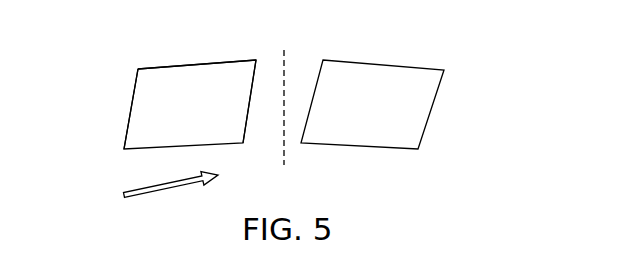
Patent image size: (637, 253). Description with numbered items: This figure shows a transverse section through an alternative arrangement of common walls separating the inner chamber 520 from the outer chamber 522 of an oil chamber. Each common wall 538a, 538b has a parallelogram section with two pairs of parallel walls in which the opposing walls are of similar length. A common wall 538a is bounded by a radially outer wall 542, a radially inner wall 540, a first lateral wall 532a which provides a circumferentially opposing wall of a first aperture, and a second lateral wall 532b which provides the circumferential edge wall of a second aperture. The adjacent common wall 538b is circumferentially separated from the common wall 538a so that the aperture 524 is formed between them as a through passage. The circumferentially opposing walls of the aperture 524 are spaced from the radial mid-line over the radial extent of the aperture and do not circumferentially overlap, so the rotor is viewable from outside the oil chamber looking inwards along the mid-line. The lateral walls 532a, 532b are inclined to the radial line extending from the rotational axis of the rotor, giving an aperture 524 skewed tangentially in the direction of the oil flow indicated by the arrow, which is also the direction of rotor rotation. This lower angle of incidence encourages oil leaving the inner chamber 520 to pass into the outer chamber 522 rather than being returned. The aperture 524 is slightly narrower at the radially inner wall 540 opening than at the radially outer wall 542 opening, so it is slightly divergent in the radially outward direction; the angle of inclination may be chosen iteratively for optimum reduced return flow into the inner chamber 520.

The inner chamber 520 is at (385, 202).
The outer chamber 522 is at (383, 38).
The aperture 524 is at (272, 77).
The first lateral wall 532a is at (247, 111).
The second lateral wall 532b is at (129, 118).
The common wall 538a is at (230, 115).
The common wall 538b is at (403, 118).
The radially inner wall 540 is at (154, 148).
The radially outer wall 542 is at (166, 65).